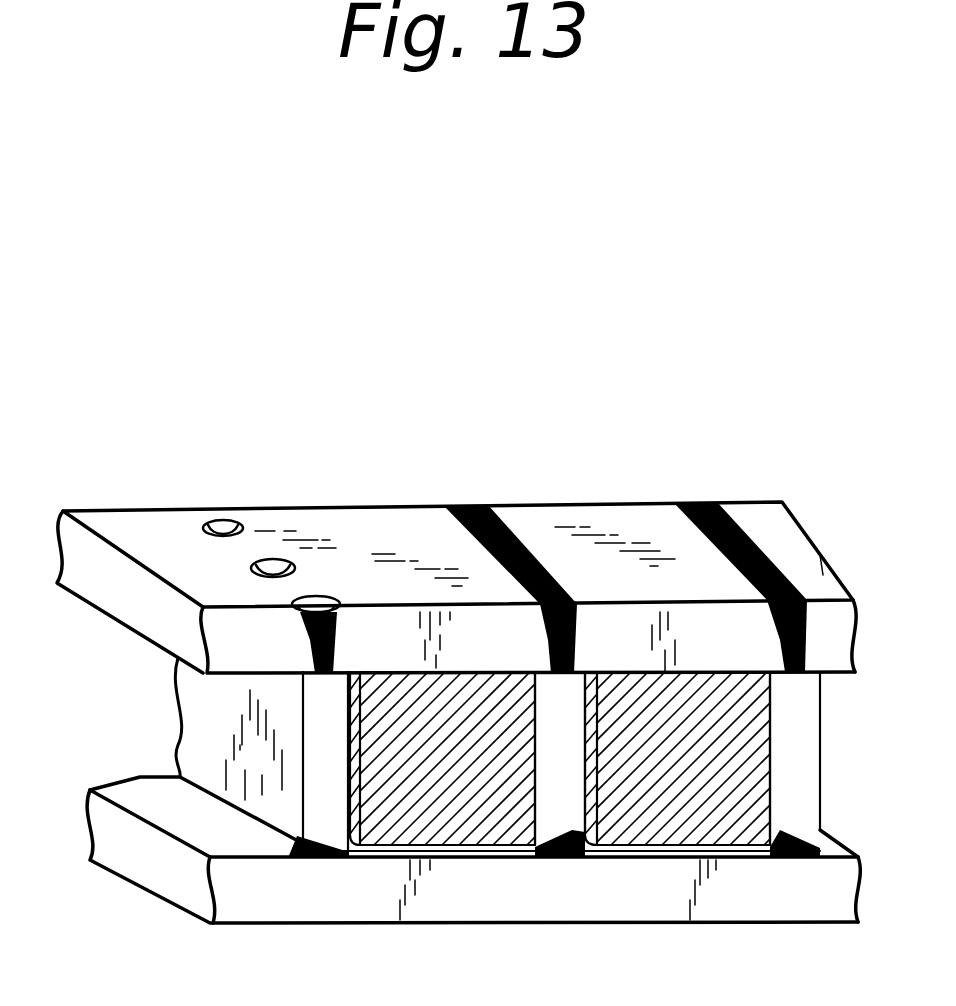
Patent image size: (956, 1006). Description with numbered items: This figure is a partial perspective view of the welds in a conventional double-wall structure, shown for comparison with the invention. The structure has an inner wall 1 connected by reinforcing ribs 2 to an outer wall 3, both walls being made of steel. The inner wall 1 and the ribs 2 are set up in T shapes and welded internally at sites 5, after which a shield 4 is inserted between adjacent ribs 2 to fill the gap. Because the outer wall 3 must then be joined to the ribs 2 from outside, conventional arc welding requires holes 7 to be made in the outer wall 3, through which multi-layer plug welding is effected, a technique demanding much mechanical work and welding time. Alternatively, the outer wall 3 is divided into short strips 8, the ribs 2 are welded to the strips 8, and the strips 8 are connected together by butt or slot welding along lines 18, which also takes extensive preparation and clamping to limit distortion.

The inner wall 1 is at (167, 852).
The reinforcing rib 2 is at (220, 722).
The outer wall 3 is at (440, 553).
The shield 4 is at (463, 777).
The welding site 5 is at (335, 858).
The hole 7 is at (317, 592).
The strip 8 is at (607, 547).
The line 18 is at (740, 530).